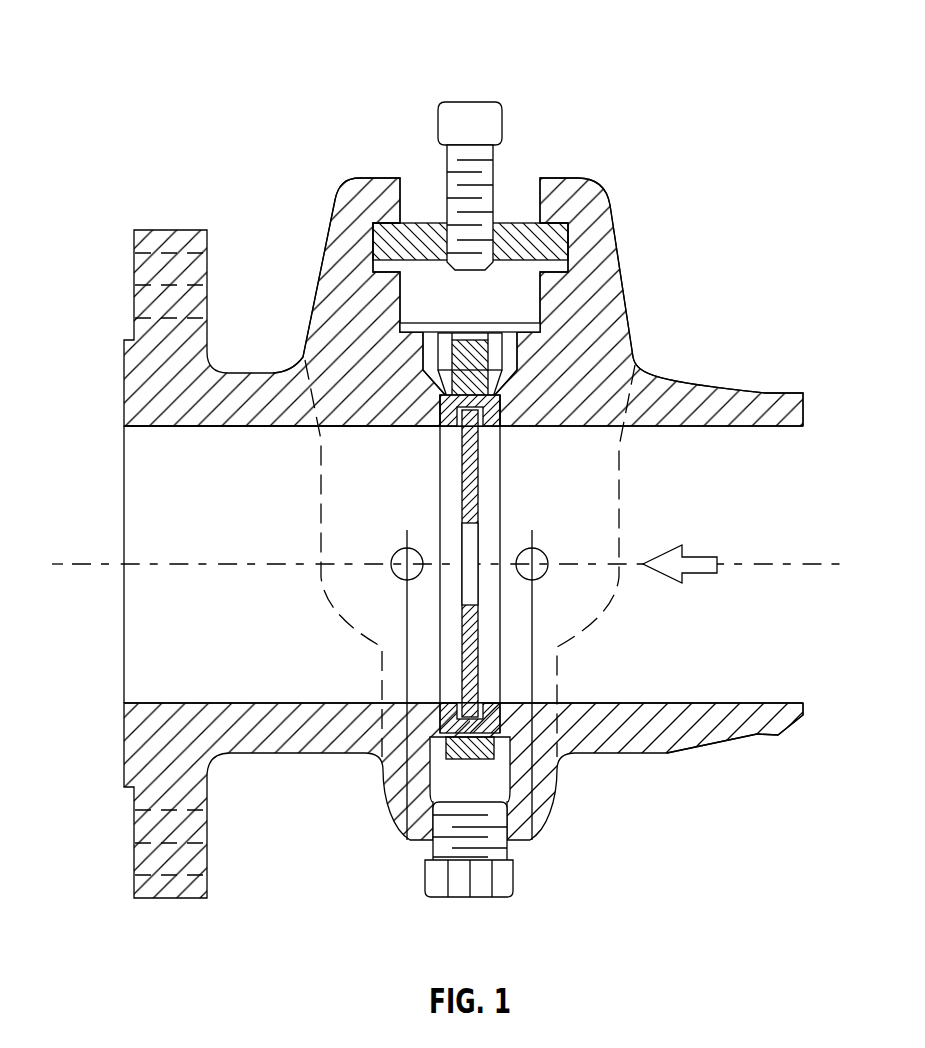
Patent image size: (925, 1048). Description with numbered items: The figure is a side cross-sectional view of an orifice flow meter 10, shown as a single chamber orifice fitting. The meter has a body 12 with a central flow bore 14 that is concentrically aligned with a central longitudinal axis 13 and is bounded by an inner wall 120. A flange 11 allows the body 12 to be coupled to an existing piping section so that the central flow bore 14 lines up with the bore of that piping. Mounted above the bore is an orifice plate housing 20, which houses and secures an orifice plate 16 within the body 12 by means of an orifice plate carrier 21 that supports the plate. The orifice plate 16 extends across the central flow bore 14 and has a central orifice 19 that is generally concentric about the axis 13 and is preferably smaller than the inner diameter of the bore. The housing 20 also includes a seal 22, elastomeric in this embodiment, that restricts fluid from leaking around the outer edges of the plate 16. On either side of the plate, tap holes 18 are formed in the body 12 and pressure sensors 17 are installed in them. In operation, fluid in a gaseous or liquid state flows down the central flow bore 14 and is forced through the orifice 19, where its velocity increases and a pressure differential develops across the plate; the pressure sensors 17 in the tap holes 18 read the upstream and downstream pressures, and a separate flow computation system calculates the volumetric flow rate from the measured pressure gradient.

The orifice flow meter 10 is at (172, 42).
The flange 11 is at (133, 300).
The body 12 is at (768, 393).
The inner wall 120 is at (238, 428).
The central longitudinal axis 13 is at (82, 563).
The central flow bore 14 is at (211, 647).
The orifice plate 16 is at (476, 493).
The pressure sensors 17 is at (399, 578).
The tap holes 18 is at (399, 553).
The central orifice 19 is at (472, 538).
The orifice plate housing 20 is at (622, 280).
The orifice plate carrier 21 is at (452, 378).
The seal 22 is at (493, 415).